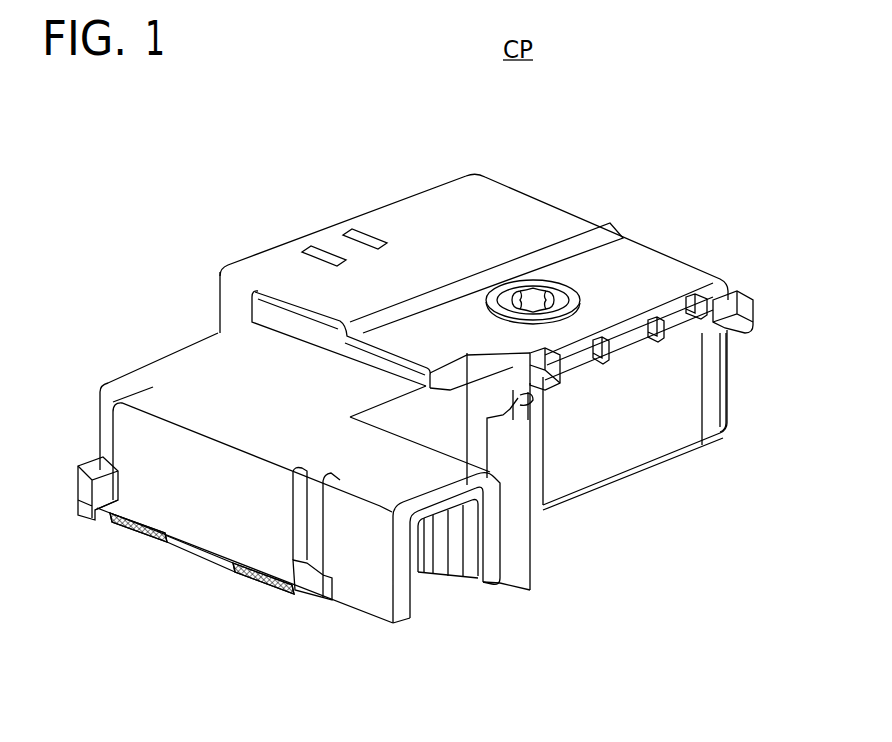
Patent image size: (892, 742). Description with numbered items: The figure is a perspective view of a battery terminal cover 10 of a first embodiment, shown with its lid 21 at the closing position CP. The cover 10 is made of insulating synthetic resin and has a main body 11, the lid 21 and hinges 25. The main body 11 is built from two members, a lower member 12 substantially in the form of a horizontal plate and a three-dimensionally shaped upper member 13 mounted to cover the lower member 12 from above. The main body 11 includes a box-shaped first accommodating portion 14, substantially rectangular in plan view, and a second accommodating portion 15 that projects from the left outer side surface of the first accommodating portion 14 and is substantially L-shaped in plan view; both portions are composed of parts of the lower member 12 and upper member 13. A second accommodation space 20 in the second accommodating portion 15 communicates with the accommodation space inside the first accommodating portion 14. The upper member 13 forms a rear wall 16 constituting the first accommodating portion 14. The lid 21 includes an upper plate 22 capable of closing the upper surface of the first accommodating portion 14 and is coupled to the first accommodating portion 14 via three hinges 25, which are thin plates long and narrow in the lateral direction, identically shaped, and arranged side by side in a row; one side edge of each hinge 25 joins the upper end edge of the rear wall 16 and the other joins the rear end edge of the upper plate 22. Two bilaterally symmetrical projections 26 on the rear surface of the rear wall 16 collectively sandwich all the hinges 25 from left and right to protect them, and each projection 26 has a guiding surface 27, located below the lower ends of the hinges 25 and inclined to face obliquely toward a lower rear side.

The cover 10 is at (650, 84).
The main body 11 is at (518, 395).
The lower member 12 is at (218, 568).
The upper member 13 is at (207, 508).
The first accommodating portion 14 is at (668, 212).
The second accommodating portion 15 is at (155, 331).
The rear wall 16 is at (650, 444).
The second accommodation space 20 is at (408, 533).
The lid 21 is at (475, 174).
The upper plate 22 is at (507, 228).
The hinges 25 is at (687, 322).
The projections 26 is at (527, 387).
The guiding surface 27 is at (748, 333).